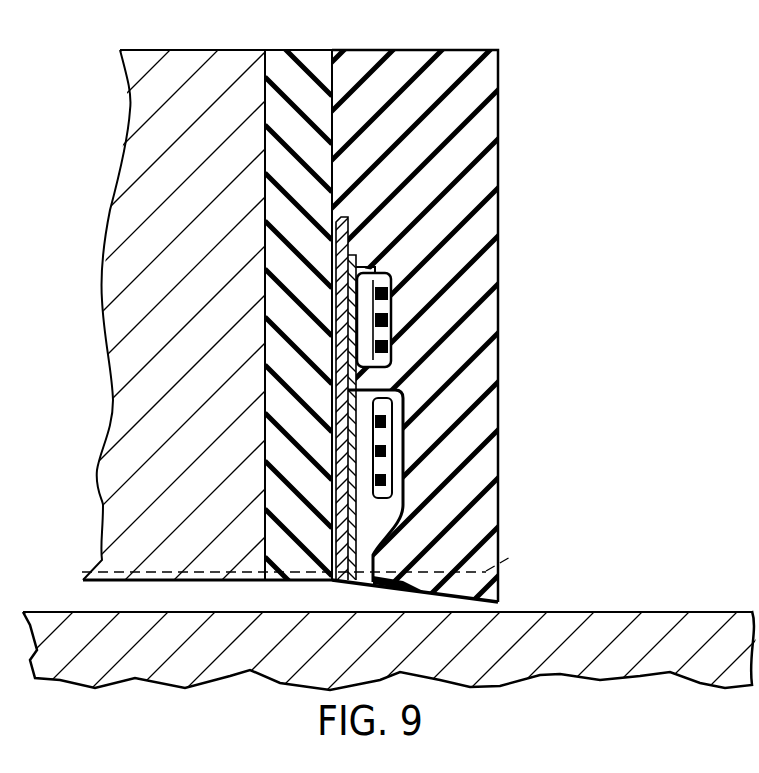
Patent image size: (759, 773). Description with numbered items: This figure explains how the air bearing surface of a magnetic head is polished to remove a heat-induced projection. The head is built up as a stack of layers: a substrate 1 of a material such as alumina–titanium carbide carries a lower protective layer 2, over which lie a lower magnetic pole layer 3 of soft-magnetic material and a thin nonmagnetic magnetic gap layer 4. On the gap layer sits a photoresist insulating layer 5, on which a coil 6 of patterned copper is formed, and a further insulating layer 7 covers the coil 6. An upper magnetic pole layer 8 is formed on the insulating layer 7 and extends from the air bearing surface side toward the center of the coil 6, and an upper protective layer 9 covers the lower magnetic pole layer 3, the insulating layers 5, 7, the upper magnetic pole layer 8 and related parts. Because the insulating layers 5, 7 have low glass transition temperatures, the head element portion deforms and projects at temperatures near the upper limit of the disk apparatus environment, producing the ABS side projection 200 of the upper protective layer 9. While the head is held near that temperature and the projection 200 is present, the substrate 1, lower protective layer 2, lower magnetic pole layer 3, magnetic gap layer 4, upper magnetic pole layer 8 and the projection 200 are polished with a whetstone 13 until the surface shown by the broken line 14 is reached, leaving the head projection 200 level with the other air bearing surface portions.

The substrate 1 is at (128, 114).
The lower protective layer 2 is at (304, 52).
The lower magnetic pole layer 3 is at (342, 236).
The magnetic gap layer 4 is at (358, 257).
The insulating layer 5 is at (362, 270).
The coil 6 is at (384, 295).
The insulating layer 7 is at (388, 278).
The upper magnetic pole layer 8 is at (400, 447).
The upper protective layer 9 is at (490, 353).
The whetstone 13 is at (652, 611).
The broken line 14 is at (313, 553).
The ABS side projection 200 is at (428, 591).